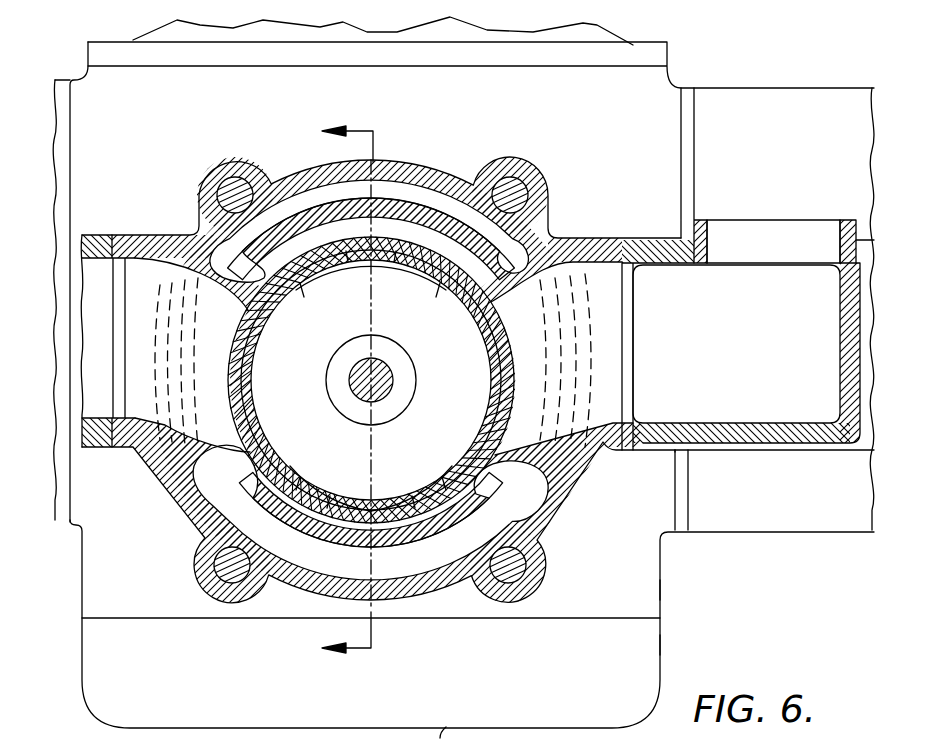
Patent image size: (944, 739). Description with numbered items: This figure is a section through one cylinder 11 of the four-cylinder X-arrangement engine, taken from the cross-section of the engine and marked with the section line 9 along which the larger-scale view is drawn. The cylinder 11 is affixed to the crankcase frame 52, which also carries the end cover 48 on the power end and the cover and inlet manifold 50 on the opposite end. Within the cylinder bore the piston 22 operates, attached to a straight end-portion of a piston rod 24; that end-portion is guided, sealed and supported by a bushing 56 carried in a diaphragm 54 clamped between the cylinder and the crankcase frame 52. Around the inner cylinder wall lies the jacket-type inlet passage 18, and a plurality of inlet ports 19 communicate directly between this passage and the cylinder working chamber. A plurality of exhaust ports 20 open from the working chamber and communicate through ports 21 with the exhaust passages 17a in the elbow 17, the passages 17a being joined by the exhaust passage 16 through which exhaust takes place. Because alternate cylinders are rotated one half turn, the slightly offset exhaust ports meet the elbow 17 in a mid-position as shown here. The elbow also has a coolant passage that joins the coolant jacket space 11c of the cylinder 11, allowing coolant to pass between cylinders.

The cylinder 11 is at (540, 542).
The coolant jacket space 11c is at (455, 196).
The exhaust passage 16 is at (773, 241).
The elbow 17 is at (111, 235).
The exhaust passage 17a is at (97, 352).
The inlet passage 18 is at (362, 528).
The inlet port 19 is at (411, 504).
The exhaust port 20 is at (509, 352).
The port 21 is at (162, 303).
The piston 22 is at (480, 306).
The piston rod 24 is at (401, 370).
The end cover 48 is at (666, 58).
The cover and inlet manifold 50 is at (653, 645).
The crankcase frame 52 is at (654, 588).
The diaphragm 54 is at (310, 430).
The bushing 56 is at (379, 427).
The section line 9- 9 is at (368, 391).